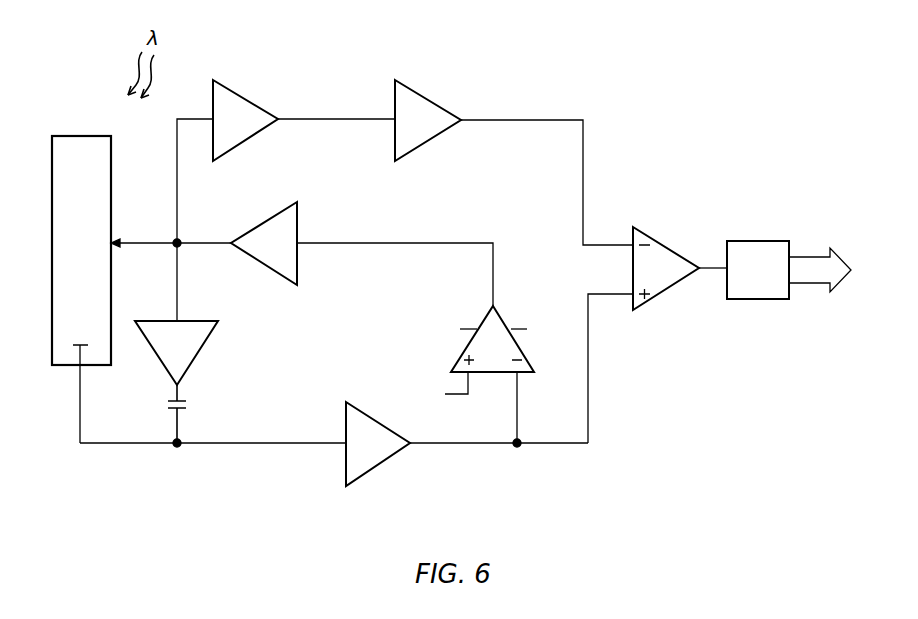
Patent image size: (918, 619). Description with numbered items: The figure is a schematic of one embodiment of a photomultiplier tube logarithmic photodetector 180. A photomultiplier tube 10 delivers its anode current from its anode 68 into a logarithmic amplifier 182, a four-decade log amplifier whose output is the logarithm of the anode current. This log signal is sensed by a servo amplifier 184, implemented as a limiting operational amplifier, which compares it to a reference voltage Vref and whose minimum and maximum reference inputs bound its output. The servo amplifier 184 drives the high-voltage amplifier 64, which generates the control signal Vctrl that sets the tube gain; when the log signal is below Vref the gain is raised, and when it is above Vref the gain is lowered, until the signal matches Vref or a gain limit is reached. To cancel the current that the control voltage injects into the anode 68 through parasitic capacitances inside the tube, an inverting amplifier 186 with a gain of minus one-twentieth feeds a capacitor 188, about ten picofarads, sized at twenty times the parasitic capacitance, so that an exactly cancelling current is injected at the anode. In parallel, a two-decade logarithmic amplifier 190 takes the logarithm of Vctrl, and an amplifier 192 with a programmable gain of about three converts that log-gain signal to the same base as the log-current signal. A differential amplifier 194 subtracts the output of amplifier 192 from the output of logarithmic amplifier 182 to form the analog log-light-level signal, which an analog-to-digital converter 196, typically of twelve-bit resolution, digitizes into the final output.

The photomultiplier tube 10 is at (80, 135).
The amplifier 64 is at (300, 222).
The anode 68 is at (80, 388).
The photomultiplier tube logarithmic photodetector 180 is at (605, 467).
The logarithmic amplifier 182 is at (380, 466).
The servo amplifier 184 is at (490, 310).
The inverting amplifier 186 is at (196, 355).
The capacitor 188 is at (194, 406).
The two-decade logarithmic amplifier 190 is at (250, 96).
The amplifier 192 is at (432, 100).
The differential amplifier 194 is at (672, 245).
The analog-to-digital converter 196 is at (758, 240).